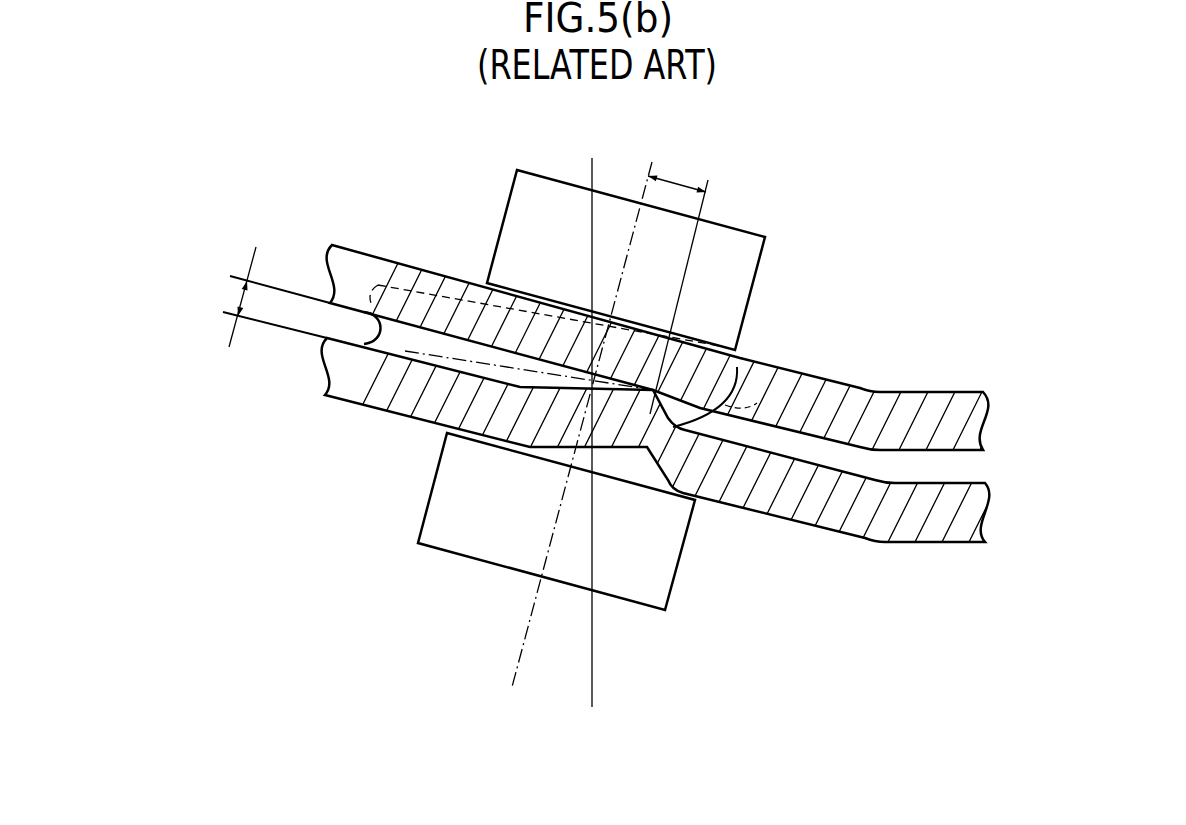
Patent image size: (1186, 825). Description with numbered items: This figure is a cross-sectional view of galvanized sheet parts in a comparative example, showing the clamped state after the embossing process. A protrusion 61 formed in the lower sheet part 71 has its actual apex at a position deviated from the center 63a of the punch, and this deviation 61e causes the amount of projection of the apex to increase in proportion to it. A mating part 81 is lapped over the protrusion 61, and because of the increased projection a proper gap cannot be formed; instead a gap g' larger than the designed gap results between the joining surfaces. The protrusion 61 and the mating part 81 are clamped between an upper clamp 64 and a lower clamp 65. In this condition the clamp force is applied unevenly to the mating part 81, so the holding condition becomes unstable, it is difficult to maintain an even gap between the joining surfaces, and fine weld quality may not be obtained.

The mating part 81 is at (412, 300).
The lower plate 71 is at (812, 525).
The protrusion 61 is at (748, 392).
The deviation 61e is at (679, 277).
The center of punch 63a is at (595, 412).
The clamp 64 is at (509, 202).
The clamp 65 is at (431, 493).
The gap g' is at (263, 297).